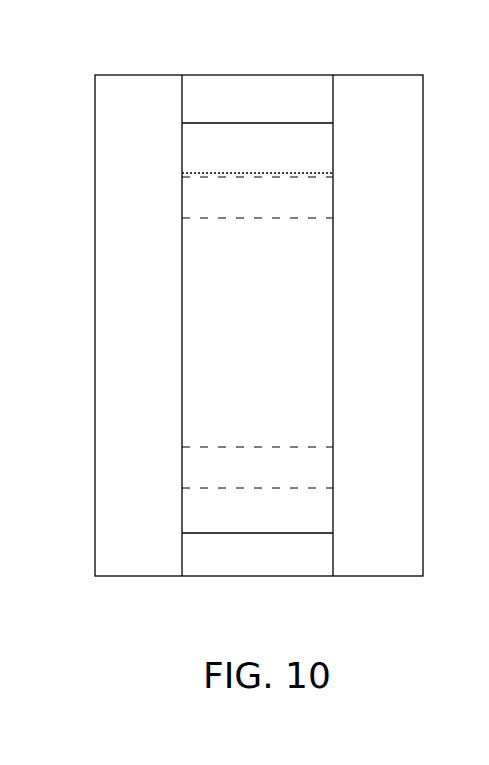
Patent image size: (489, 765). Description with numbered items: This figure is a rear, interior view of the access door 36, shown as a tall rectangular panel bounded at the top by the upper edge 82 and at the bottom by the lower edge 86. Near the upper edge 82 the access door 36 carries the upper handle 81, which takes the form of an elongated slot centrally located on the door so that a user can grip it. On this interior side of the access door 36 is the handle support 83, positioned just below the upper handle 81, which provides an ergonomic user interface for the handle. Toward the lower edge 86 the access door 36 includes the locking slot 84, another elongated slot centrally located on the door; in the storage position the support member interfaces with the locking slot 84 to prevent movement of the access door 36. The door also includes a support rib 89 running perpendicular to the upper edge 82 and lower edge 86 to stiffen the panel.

The access door 36 is at (113, 116).
The upper handle 81 is at (318, 196).
The upper edge 82 is at (201, 75).
The handle support 83 is at (314, 144).
The locking slot 84 is at (312, 468).
The lower edge 86 is at (220, 576).
The support rib 89 is at (211, 325).